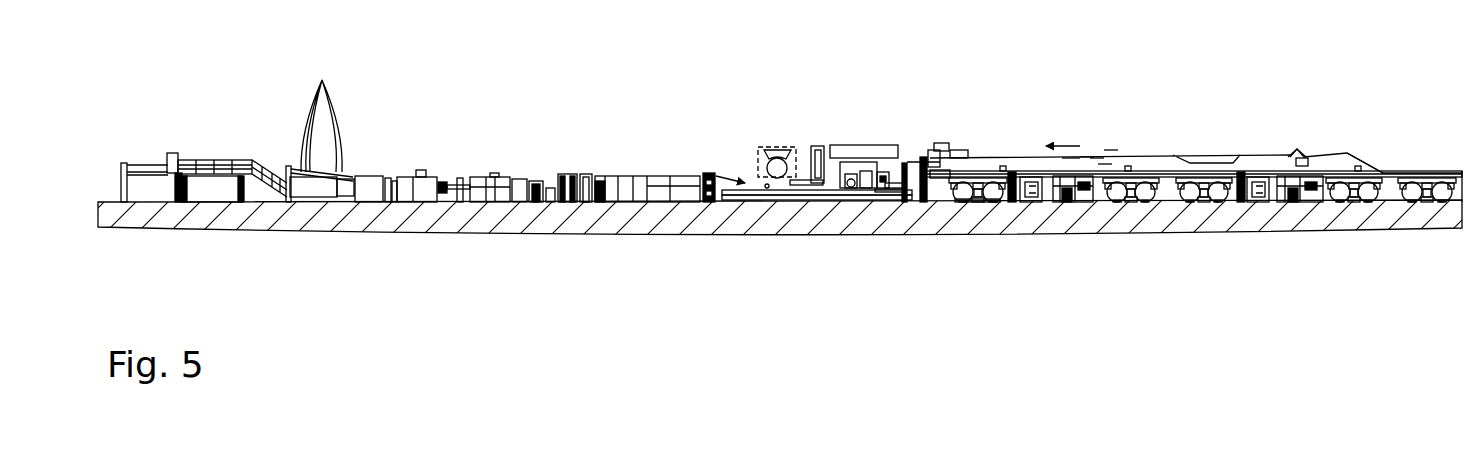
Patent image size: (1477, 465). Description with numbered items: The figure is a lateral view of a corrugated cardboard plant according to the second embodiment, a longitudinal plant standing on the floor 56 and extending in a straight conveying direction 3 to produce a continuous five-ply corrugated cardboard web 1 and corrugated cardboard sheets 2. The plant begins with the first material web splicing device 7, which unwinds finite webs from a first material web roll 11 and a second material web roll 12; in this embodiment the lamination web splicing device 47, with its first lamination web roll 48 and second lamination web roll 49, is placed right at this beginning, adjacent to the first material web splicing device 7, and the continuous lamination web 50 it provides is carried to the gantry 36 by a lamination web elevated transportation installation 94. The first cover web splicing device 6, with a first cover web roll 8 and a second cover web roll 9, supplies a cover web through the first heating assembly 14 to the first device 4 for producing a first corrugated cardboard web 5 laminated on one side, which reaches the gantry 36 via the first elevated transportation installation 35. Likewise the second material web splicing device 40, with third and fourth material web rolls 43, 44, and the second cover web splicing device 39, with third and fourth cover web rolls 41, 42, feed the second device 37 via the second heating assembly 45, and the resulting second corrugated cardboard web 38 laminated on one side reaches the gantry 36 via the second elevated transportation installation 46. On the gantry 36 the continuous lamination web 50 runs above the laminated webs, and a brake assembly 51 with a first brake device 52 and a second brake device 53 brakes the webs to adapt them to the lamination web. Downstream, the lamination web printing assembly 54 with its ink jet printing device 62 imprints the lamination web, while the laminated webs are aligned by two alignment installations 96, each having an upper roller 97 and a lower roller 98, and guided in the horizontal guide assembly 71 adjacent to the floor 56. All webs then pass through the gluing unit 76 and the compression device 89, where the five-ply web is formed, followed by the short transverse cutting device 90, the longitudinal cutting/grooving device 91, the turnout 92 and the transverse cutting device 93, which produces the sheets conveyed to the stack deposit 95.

The continuous corrugated cardboard web 1 is at (592, 170).
The corrugated cardboard sheets 2 is at (322, 80).
The conveying direction 3 is at (1088, 157).
The first device for producing a first corrugated cardboard web laminated on one sid 4 is at (1302, 212).
The first corrugated cardboard web laminated on one side 5 is at (1302, 163).
The first cover web splicing device 6 is at (1207, 212).
The first material web splicing device 7 is at (1353, 212).
The first cover web roll 8 is at (1191, 202).
The second cover web roll 9 is at (1219, 202).
The first material web roll 11 is at (1340, 202).
The second material web roll 12 is at (1369, 202).
The first heating assembly 14 is at (1257, 202).
The first elevated transportation installation 35 is at (1294, 155).
The gantry 36 is at (1110, 151).
The second device for producing a second corrugated cardboard web laminated on one s 37 is at (1077, 212).
The second corrugated cardboard web laminated on one side 38 is at (1097, 158).
The second cover web splicing device 39 is at (961, 202).
The second material web splicing device 40 is at (1138, 212).
The third cover web roll 41 is at (978, 212).
The fourth cover web roll 42 is at (992, 202).
The third material web roll 43 is at (1116, 202).
The fourth material web roll 44 is at (1146, 202).
The second heating assembly 45 is at (1030, 201).
The second elevated transportation installation 46 is at (1104, 164).
The lamination web splicing device 47 is at (1427, 212).
The first lamination web roll 48 is at (1405, 202).
The second lamination web roll 49 is at (1443, 202).
The continuous lamination web 50 is at (862, 164).
The brake assembly 51 is at (942, 142).
The first brake device 52 is at (959, 152).
The second brake device 53 is at (1075, 158).
The lamination web printing assembly 54 is at (839, 143).
The floor 56 is at (734, 233).
The ink jet printing device 62 is at (773, 143).
The guide assembly 71 is at (800, 209).
The gluing unit 76 is at (713, 170).
The compression device 89 is at (668, 164).
The short transverse cutting device 90 is at (585, 170).
The longitudinal cutting/grooving device 91 is at (494, 171).
The turnout 92 is at (459, 176).
The transverse cutting device 93 is at (419, 167).
The lamination web elevated transportation installation 94 is at (1384, 172).
The stack deposit 95 is at (216, 148).
The alignment installation 96 is at (916, 158).
The upper roller 97 is at (884, 196).
The lower roller 98 is at (900, 187).